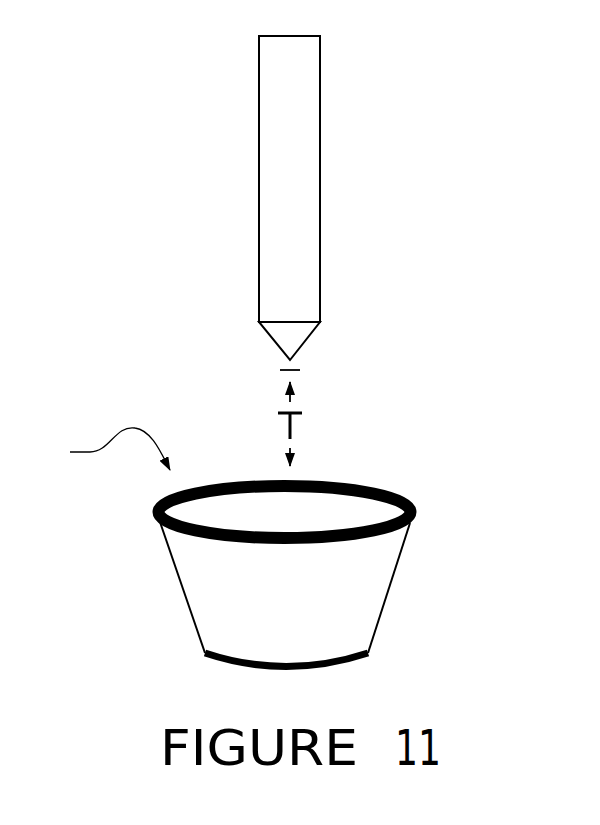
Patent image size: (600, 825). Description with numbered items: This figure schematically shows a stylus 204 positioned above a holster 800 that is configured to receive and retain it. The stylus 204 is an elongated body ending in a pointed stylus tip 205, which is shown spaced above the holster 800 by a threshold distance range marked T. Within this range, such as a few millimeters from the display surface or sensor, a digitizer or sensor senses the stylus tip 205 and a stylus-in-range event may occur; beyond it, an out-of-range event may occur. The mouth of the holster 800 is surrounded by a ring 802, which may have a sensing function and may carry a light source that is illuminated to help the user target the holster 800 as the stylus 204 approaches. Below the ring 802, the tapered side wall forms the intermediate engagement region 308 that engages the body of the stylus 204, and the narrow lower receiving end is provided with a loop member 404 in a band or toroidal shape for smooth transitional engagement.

The stylus 204 is at (320, 90).
The stylus tip 205 is at (301, 347).
The intermediate engagement region 308 is at (387, 565).
The ring 802 is at (387, 478).
The loop member 404 is at (198, 646).
The holster 800 is at (101, 449).